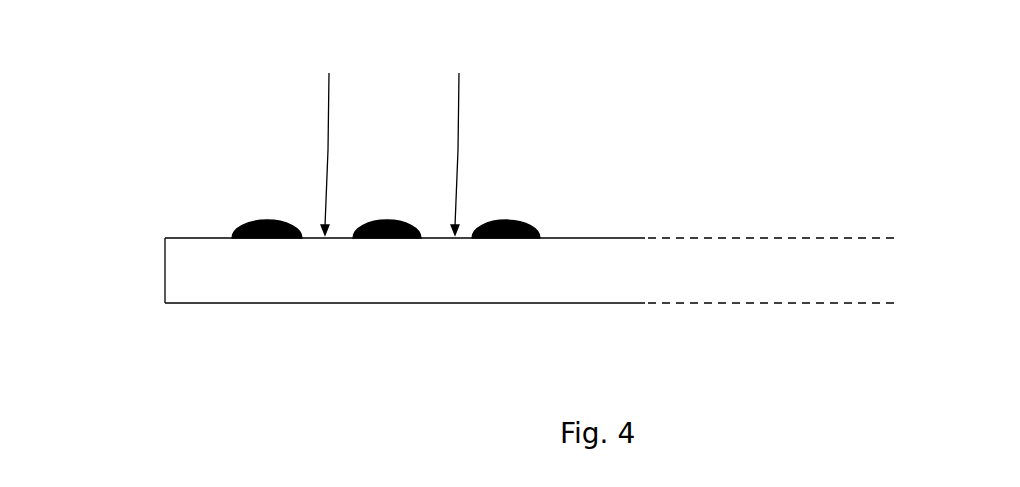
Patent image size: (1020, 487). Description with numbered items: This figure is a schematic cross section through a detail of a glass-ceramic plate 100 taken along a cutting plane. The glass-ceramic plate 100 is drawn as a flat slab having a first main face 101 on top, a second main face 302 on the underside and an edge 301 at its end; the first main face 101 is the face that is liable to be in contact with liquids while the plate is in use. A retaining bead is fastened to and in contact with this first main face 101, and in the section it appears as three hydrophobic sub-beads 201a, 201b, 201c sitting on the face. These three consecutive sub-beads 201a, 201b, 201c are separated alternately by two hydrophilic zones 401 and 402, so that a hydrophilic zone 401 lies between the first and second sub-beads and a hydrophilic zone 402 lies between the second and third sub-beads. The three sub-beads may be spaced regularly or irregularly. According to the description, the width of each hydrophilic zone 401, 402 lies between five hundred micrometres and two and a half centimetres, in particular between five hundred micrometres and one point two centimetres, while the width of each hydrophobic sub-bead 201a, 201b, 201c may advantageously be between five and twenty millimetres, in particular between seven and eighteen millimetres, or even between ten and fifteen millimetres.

The glass-ceramic plate 100 is at (138, 192).
The first main face 101 is at (612, 237).
The hydrophobic sub-bead 201a is at (505, 222).
The hydrophobic sub-bead 201b is at (386, 222).
The hydrophobic sub-bead 201c is at (268, 218).
The edge 301 is at (165, 273).
The second main face 302 is at (455, 305).
The hydrophilic zone 401 is at (333, 136).
The hydrophilic zone 402 is at (459, 136).